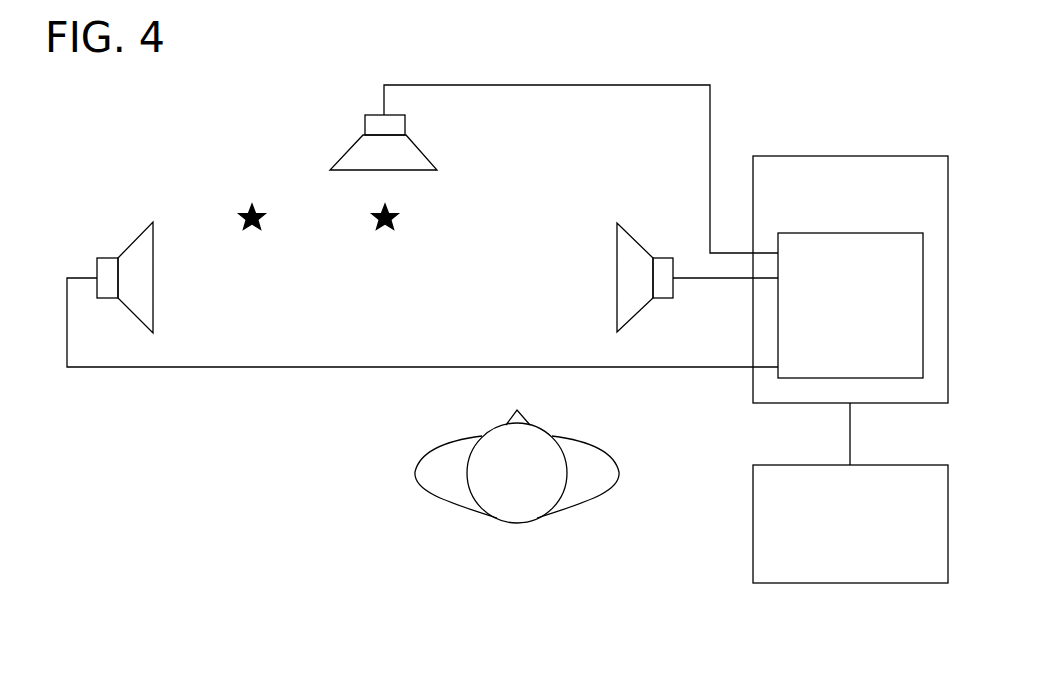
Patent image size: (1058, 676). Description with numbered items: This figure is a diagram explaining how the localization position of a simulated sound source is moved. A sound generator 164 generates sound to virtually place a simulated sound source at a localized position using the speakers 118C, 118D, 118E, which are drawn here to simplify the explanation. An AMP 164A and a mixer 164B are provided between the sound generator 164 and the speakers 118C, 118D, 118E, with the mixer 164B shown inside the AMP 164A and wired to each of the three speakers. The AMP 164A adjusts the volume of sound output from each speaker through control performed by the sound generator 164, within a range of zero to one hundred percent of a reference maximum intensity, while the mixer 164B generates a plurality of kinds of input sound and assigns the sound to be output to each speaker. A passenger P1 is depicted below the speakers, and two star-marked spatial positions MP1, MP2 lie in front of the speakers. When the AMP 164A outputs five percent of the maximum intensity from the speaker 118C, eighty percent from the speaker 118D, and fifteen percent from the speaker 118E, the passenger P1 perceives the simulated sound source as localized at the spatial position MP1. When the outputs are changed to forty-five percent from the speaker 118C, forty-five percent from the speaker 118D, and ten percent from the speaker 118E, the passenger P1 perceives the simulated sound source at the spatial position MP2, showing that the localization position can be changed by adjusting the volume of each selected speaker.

The speaker 118E is at (352, 150).
The speaker 118D is at (153, 278).
The speaker 118C is at (617, 278).
The spatial position MP1 is at (242, 212).
The spatial position MP2 is at (396, 222).
The AMP 164A is at (884, 157).
The mixer 164B is at (858, 233).
The sound generator 164 is at (884, 465).
The passenger P1 is at (517, 523).